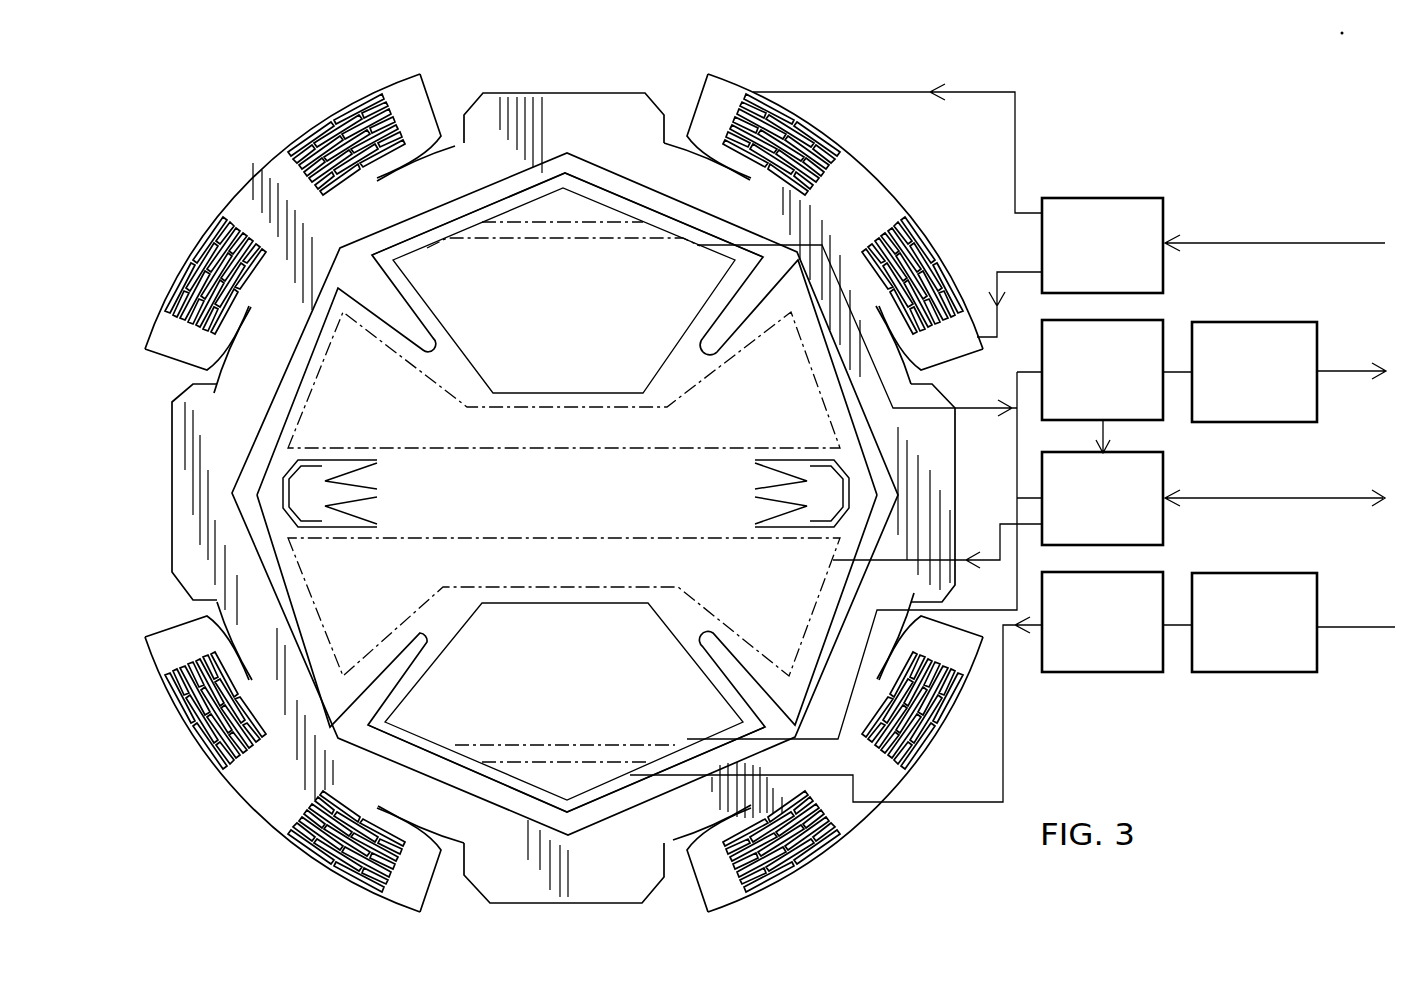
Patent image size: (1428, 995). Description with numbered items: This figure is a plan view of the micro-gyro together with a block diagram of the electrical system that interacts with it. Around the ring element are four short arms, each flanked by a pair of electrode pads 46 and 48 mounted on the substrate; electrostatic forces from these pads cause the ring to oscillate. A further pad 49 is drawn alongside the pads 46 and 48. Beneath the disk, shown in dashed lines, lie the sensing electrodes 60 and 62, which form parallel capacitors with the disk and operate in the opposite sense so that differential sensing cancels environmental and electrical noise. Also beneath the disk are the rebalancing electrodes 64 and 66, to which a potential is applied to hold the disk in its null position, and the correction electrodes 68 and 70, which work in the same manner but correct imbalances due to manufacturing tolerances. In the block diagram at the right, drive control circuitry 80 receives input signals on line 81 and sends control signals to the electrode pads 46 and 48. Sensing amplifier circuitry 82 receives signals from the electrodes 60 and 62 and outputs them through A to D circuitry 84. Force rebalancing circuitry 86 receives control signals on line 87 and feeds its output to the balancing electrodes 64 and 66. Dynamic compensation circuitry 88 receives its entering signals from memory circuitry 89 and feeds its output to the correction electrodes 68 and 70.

The electrode pad 46 is at (564, 493).
The electrode pad 48 is at (635, 493).
The coil 49 is at (205, 692).
The sensing electrode 60 is at (561, 289).
The sensing electrode 62 is at (553, 701).
The rebalancing electrode 64 is at (565, 494).
The rebalancing electrode 66 is at (559, 492).
The correction electrode 68 is at (567, 196).
The correction electrode 70 is at (566, 789).
The drive control circuitry 80 is at (1140, 231).
The input line 81 is at (1275, 224).
The sensing amplifier circuitry 82 is at (1133, 350).
The A to D circuitry 84 is at (1292, 352).
The force rebalancing circuitry 86 is at (1130, 494).
The control line 87 is at (1275, 474).
The dynamic compensation circuitry 88 is at (1130, 602).
The memory circuitry 89 is at (1295, 602).